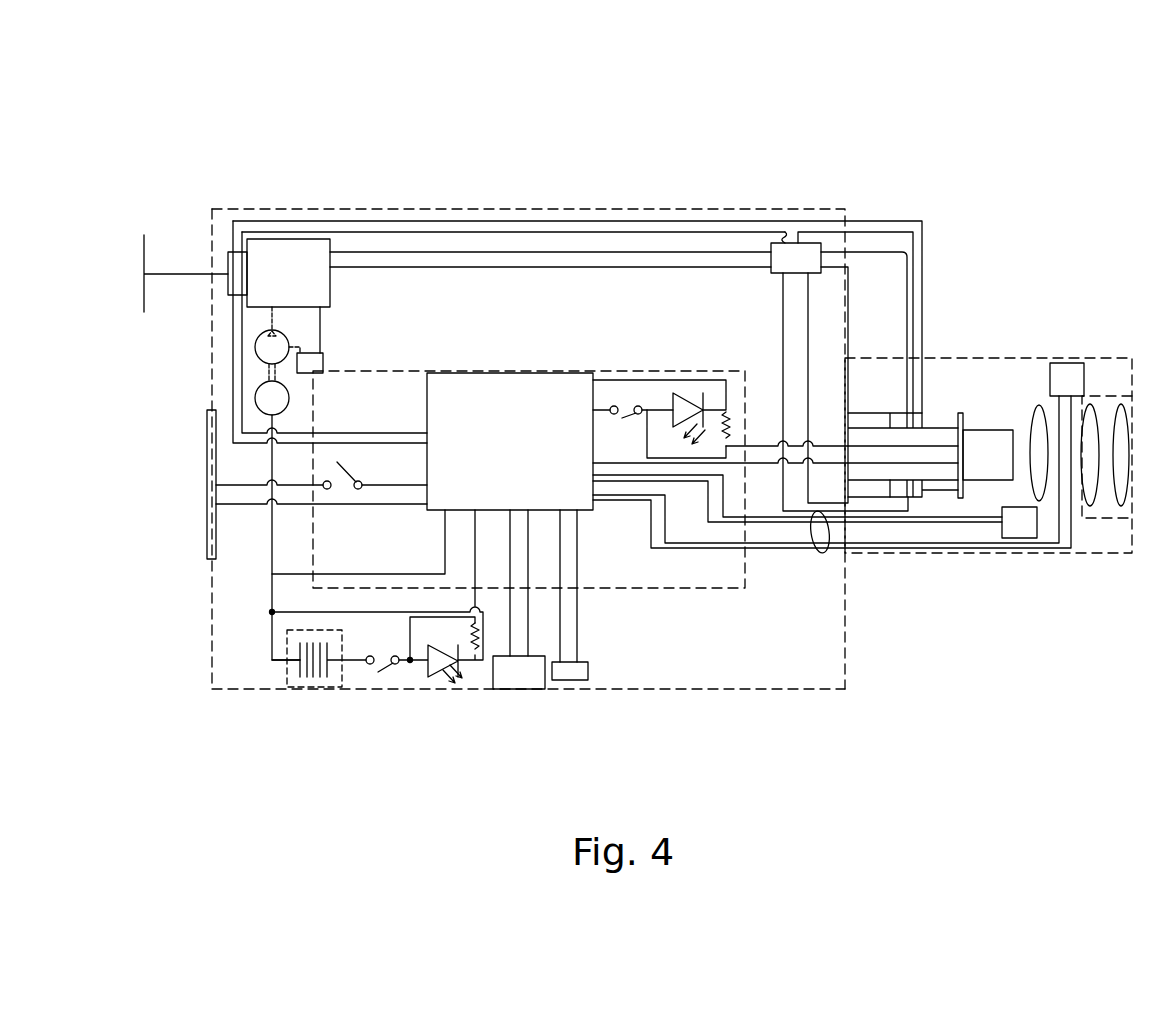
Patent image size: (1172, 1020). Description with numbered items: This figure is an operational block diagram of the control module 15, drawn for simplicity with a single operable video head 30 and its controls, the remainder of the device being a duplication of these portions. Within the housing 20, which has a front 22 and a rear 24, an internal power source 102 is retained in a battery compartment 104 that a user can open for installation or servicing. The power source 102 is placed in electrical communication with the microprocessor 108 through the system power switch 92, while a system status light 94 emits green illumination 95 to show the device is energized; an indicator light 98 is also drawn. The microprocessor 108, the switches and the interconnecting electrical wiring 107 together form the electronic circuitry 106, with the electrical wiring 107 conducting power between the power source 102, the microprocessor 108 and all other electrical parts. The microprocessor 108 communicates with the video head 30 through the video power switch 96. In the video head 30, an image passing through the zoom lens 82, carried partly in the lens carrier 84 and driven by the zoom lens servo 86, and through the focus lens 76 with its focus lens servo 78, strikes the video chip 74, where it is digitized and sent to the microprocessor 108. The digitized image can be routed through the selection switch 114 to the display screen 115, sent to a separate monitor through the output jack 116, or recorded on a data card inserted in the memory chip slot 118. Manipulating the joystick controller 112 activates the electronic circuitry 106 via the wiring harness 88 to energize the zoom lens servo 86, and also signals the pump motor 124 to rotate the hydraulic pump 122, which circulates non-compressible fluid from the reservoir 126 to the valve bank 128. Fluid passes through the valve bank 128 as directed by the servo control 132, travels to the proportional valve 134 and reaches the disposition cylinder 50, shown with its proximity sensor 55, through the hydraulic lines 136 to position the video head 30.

The control module 15 is at (265, 183).
The housing 20 is at (614, 200).
The front 22 is at (845, 662).
The rear 24 is at (210, 598).
The video head 30 is at (1019, 355).
The disposition cylinder 50 is at (903, 412).
The proximity sensor 55 is at (920, 413).
The video chip 74 is at (984, 430).
The focus lens 76 is at (1036, 406).
The focus lens servo 78 is at (1024, 530).
The zoom lens 82 is at (1125, 405).
The lens carrier 84 is at (1117, 518).
The zoom lens servo 86 is at (1072, 368).
The wiring harness 88 is at (818, 556).
The system power switch 92 is at (377, 672).
The system status light 94 is at (428, 665).
The illumination 95 is at (688, 428).
The video power switch 96 is at (624, 420).
The indicator light 98 is at (672, 395).
The power source 102 is at (324, 672).
The battery compartment 104 is at (284, 672).
The electronic circuitry 106 is at (657, 590).
The electrical wiring 107 is at (372, 573).
The microprocessor 108 is at (502, 384).
The joystick controller 112 is at (143, 263).
The selection switch 114 is at (348, 463).
The display screen 115 is at (207, 460).
The output jack 116 is at (576, 678).
The memory chip slot 118 is at (524, 685).
The hydraulic pump 122 is at (255, 346).
The pump motor 124 is at (255, 398).
The reservoir 126 is at (309, 363).
The valve bank 128 is at (320, 286).
The servo control 132 is at (235, 262).
The proportional valve 134 is at (781, 266).
The hydraulic line 136 is at (658, 268).